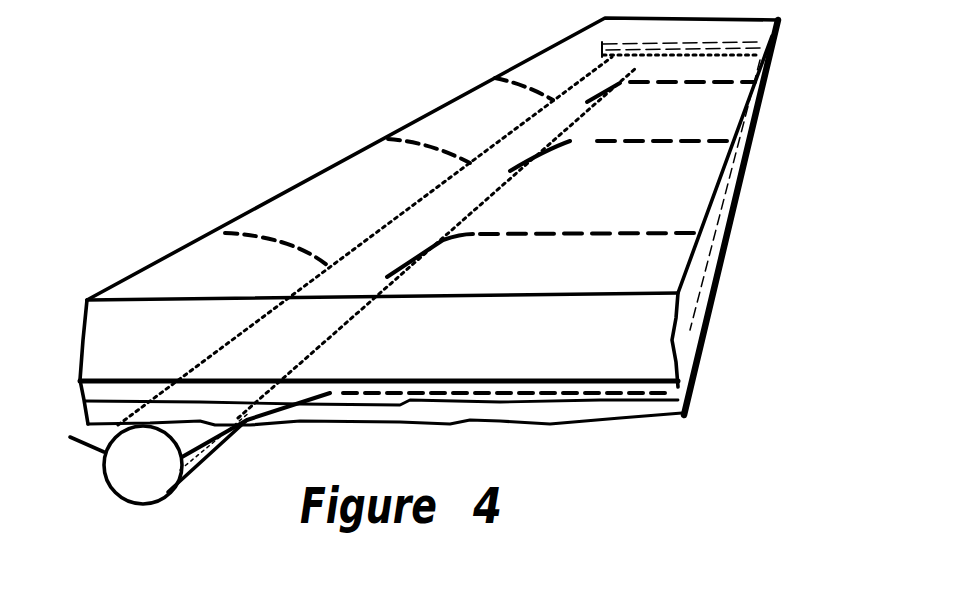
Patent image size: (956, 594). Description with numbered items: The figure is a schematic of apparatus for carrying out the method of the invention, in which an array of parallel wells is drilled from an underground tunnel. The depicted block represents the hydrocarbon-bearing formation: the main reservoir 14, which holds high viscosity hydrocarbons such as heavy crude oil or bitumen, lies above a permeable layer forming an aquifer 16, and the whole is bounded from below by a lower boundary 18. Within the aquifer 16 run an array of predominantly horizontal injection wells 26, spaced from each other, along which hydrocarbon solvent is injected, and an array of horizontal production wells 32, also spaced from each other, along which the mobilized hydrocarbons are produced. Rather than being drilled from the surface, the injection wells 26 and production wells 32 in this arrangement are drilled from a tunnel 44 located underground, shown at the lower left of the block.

The main reservoir 14 is at (663, 317).
The aquifer 16 is at (680, 397).
The lower boundary 18 is at (670, 415).
The horizontal injection wells 26 is at (567, 143).
The horizontal production wells 32 is at (620, 82).
The tunnel 44 is at (163, 493).